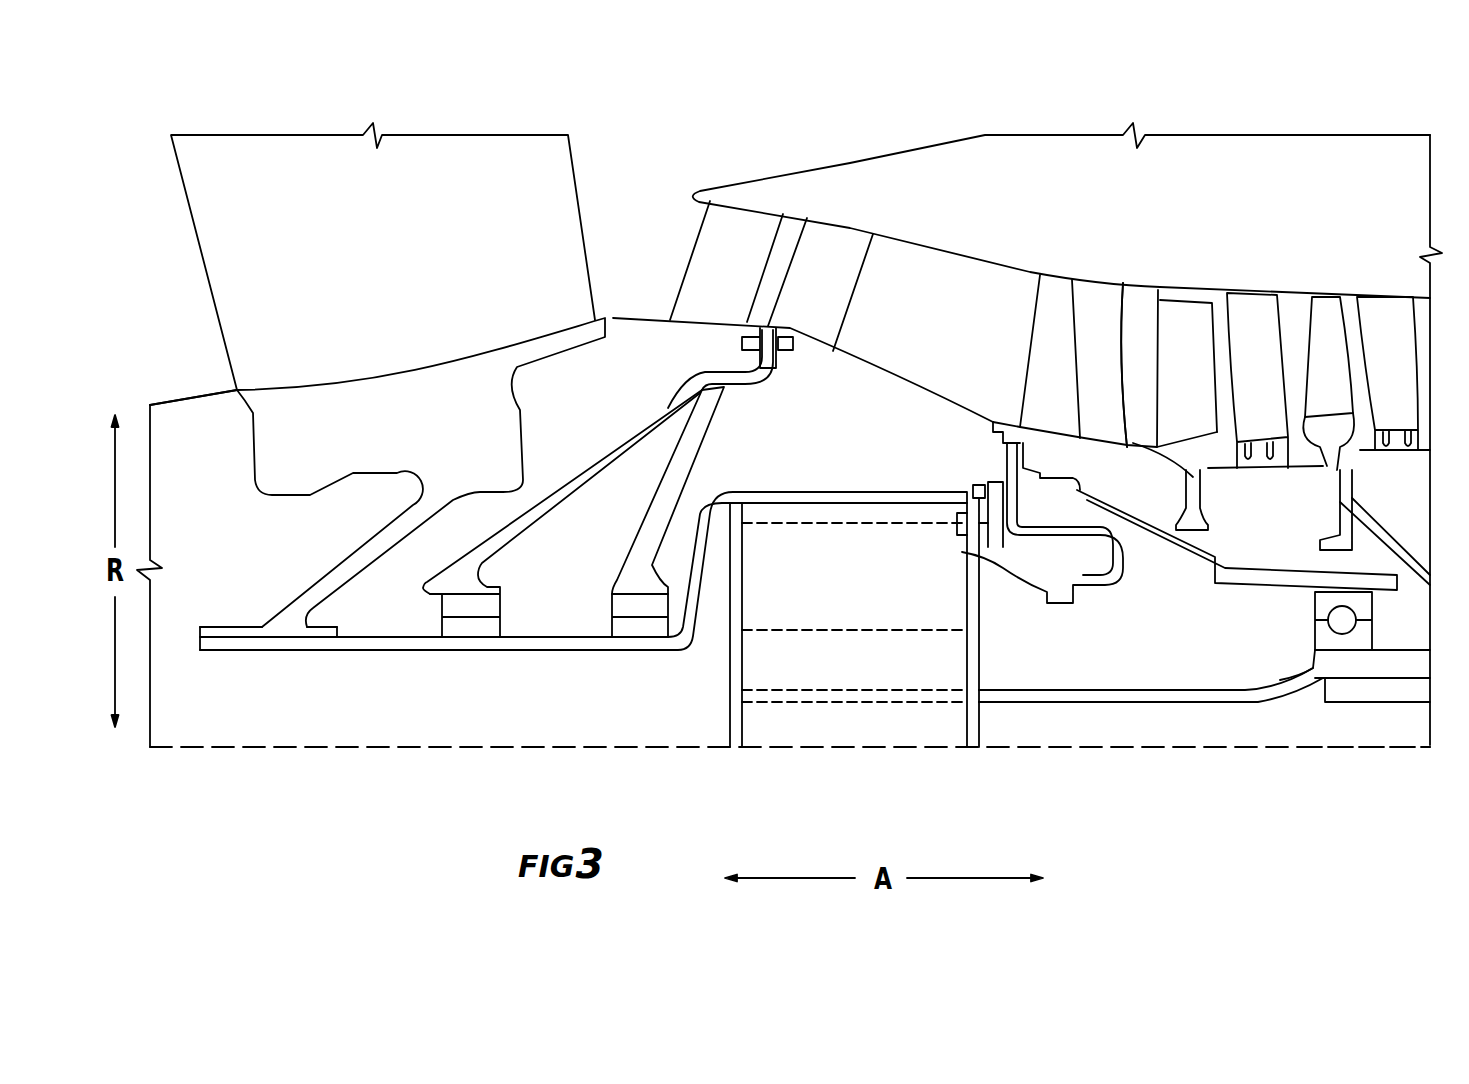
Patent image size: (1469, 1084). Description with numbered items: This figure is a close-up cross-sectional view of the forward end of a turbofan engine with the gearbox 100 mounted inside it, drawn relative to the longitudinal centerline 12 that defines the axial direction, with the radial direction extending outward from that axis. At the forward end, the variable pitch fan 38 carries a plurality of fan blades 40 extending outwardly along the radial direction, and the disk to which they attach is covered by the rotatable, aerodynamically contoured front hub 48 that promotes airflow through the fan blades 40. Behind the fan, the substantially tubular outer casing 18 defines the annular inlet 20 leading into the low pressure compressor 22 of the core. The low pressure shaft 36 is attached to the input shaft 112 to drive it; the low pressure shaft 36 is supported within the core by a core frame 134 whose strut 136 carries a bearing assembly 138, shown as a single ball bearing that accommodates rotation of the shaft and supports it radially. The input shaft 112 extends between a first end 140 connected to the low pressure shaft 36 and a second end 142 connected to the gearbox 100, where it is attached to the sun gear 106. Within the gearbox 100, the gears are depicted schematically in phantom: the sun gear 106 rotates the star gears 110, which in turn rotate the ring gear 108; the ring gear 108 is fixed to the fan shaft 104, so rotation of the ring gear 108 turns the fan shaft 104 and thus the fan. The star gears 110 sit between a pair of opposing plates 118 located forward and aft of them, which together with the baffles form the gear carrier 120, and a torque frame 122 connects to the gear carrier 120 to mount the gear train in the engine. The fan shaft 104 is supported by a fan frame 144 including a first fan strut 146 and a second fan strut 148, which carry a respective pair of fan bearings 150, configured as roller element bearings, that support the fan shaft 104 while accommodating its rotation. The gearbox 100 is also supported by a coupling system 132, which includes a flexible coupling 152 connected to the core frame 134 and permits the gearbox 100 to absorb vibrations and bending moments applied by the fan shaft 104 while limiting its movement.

The longitudinal centerline 12 is at (1393, 752).
The outer casing 18 is at (781, 191).
The annular inlet 20 is at (677, 215).
The low pressure compressor 22 is at (1350, 300).
The low pressure shaft 36 is at (1397, 690).
The variable pitch fan 38 is at (200, 353).
The fan blades 40 is at (483, 279).
The front hub 48 is at (172, 422).
The gearbox 100 is at (798, 527).
The fan shaft 104 is at (707, 507).
The sun gear 106 is at (785, 675).
The ring gear 108 is at (866, 520).
The star gears 110 is at (755, 607).
The input shaft 112 is at (1112, 693).
The plates 118 is at (735, 683).
The gear carrier 120 is at (983, 668).
The torque frame 122 is at (993, 523).
The coupling system 132 is at (1113, 585).
The core frame 134 is at (1098, 478).
The strut 136 is at (1150, 527).
The bearing assembly 138 is at (1313, 622).
The first end 140 is at (1310, 697).
The second end 142 is at (983, 712).
The fan frame 144 is at (803, 317).
The first fan strut 146 is at (627, 440).
The second fan strut 148 is at (692, 450).
The fan bearings 150 is at (610, 607).
The flexible coupling 152 is at (1065, 527).